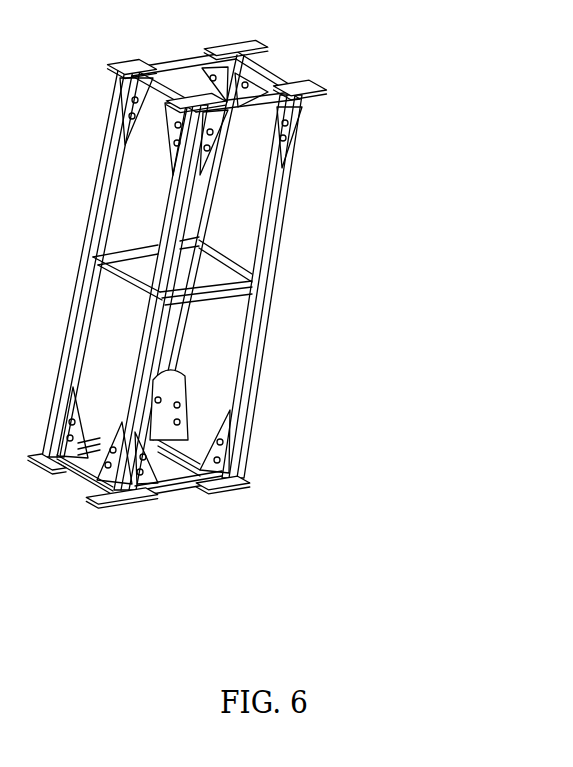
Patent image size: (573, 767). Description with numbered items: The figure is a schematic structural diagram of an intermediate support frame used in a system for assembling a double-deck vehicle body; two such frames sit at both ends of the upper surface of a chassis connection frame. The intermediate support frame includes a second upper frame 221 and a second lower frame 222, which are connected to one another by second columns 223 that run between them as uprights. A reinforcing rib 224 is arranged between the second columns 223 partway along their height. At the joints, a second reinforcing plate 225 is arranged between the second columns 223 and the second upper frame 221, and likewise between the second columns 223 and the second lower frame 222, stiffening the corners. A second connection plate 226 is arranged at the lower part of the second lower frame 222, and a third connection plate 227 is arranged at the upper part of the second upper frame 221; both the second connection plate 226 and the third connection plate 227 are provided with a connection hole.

The second upper frame 221 is at (277, 75).
The second lower frame 222 is at (182, 490).
The second column 223 is at (280, 233).
The reinforcing rib 224 is at (220, 295).
The second reinforcing plate 225 is at (295, 120).
The second connection plate 226 is at (115, 505).
The third connection plate 227 is at (320, 88).